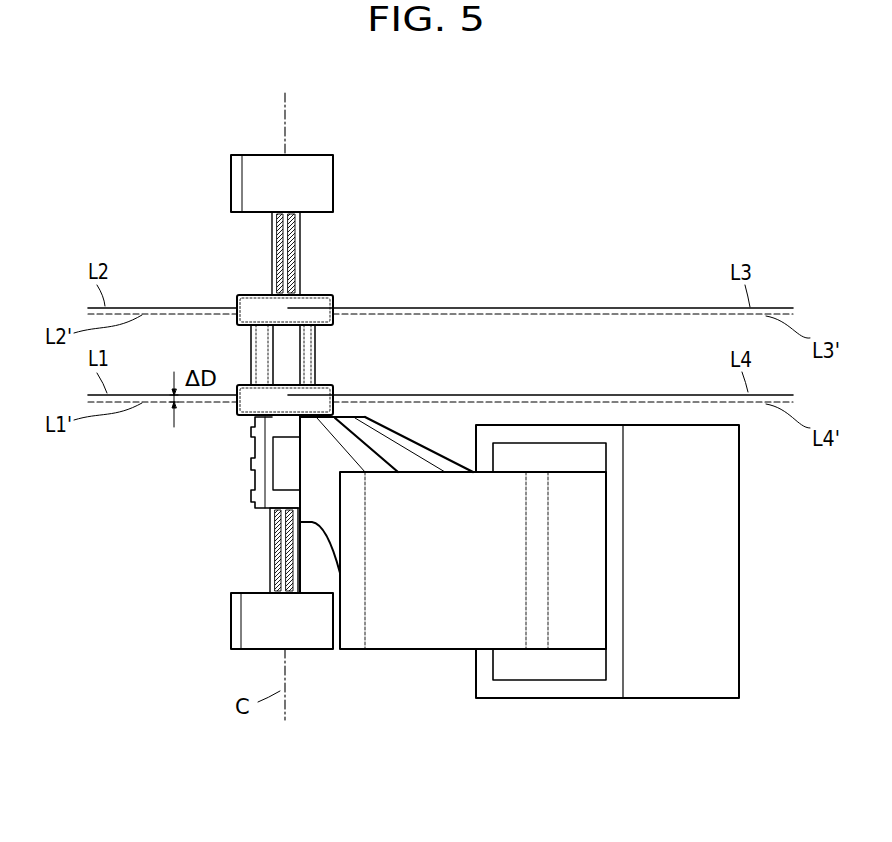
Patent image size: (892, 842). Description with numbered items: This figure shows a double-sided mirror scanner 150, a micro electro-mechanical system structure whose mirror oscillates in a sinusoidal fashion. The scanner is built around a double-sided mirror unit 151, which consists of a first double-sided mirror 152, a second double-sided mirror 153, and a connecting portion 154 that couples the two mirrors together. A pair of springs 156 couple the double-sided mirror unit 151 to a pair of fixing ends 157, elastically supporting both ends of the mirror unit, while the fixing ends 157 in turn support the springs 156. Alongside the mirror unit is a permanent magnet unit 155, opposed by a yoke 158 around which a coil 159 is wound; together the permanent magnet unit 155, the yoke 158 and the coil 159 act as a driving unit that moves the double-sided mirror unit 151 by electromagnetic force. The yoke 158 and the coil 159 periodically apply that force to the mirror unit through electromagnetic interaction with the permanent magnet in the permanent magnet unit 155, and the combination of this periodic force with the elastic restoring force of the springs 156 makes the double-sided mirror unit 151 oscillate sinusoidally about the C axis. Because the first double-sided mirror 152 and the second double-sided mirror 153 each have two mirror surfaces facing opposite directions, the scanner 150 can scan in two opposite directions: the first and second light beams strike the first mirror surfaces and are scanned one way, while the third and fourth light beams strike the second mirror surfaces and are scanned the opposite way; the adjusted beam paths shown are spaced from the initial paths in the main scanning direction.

The double-sided mirror scanner 150 is at (587, 146).
The double-sided mirror unit 151 is at (354, 340).
The first double-sided mirror 152 is at (322, 390).
The second double-sided mirror 153 is at (337, 302).
The connecting portion 154 is at (316, 356).
The permanent magnet unit 155 is at (253, 463).
The springs 156 is at (301, 253).
The fixing ends 157 is at (335, 178).
The yoke 158 is at (300, 528).
The coil 159 is at (482, 694).